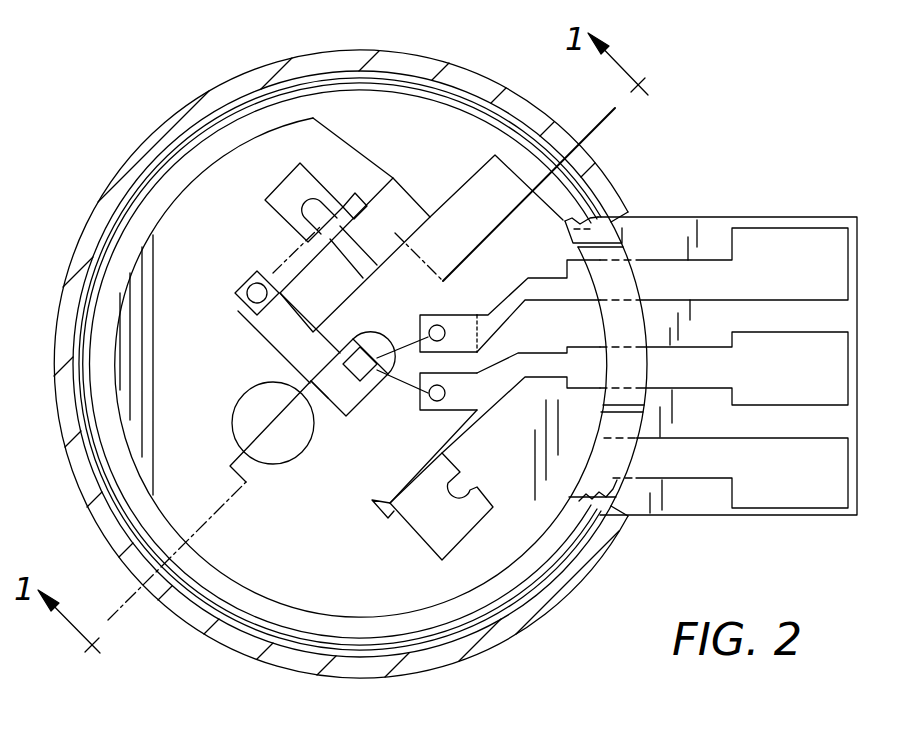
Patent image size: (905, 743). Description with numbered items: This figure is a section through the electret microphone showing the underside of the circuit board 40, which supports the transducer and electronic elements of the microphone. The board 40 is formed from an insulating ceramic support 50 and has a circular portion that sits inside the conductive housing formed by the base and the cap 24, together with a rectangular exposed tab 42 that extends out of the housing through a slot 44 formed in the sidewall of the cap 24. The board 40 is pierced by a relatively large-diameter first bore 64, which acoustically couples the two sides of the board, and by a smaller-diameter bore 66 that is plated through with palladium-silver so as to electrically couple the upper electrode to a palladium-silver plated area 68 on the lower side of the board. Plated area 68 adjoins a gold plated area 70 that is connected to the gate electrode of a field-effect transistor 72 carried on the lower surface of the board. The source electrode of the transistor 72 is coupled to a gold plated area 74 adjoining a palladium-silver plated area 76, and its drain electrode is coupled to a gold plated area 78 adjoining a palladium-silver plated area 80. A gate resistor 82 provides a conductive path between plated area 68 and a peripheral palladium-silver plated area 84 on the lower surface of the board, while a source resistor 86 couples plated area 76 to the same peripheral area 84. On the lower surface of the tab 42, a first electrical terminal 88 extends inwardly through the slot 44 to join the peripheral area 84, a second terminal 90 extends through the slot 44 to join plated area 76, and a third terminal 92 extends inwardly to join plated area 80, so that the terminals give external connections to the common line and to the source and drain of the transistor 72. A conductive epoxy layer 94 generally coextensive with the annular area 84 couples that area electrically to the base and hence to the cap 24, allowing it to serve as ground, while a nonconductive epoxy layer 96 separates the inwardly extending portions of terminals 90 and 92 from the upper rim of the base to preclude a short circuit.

The cap 24 is at (518, 633).
The circuit board 40 is at (228, 100).
The tab 42 is at (705, 232).
The slot 44 is at (615, 200).
The ceramic support 50 is at (457, 102).
The first bore 64 is at (282, 460).
The smaller-diameter bore 66 is at (248, 288).
The palladium-silver plated area 68 is at (283, 306).
The gold plated area 70 is at (372, 388).
The field-effect transistor 72 is at (362, 350).
The gold plated area 74 is at (449, 420).
The palladium-silver plated area 76 is at (476, 433).
The gold plated area 78 is at (456, 326).
The palladium-silver plated area 80 is at (528, 300).
The gate resistor 82 is at (284, 187).
The peripheral palladium-silver plated area 84 is at (181, 186).
The source resistor 86 is at (415, 518).
The first electrical terminal 88 is at (743, 493).
The second electrical terminal 90 is at (785, 396).
The third terminal 92 is at (772, 240).
The conductive epoxy layer 94 is at (620, 489).
The nonconductive epoxy layer 96 is at (628, 248).